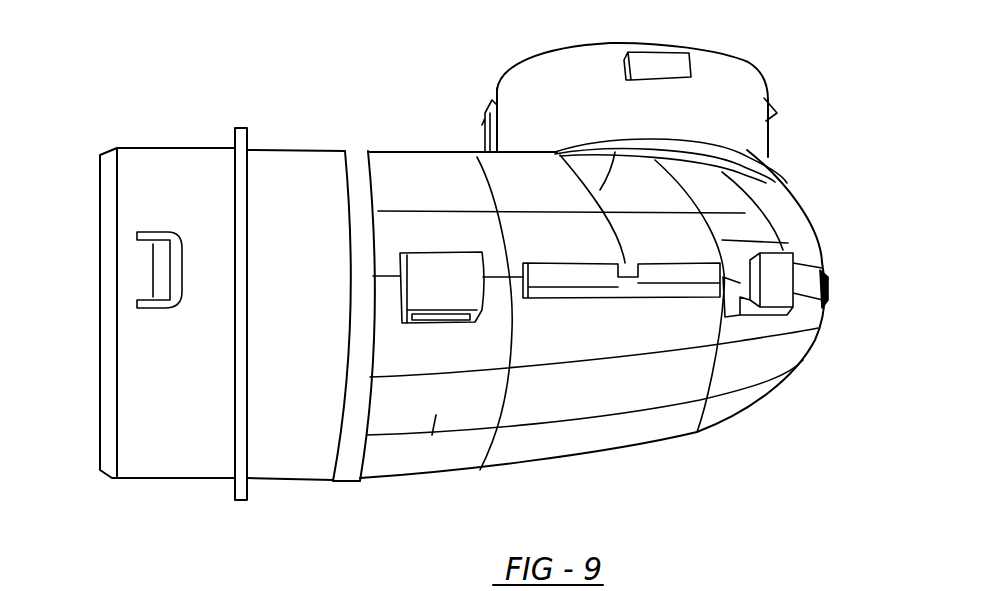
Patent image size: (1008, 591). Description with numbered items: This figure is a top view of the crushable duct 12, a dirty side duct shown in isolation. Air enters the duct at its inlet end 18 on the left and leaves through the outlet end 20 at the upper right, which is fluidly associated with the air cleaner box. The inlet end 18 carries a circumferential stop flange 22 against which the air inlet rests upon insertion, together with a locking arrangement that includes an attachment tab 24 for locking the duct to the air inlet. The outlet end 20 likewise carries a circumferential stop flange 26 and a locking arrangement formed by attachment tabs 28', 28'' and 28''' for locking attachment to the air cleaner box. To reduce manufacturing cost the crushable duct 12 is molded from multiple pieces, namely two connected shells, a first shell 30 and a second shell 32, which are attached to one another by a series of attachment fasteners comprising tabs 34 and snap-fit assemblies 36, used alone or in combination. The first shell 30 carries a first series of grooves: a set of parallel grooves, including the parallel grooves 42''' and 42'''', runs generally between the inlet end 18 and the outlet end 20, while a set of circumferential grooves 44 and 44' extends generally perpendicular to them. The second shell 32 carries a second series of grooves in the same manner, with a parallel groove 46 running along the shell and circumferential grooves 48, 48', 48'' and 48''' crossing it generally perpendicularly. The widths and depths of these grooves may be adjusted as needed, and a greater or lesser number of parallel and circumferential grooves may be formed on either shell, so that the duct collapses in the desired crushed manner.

The crushable duct 12 is at (744, 485).
The inlet end 18 is at (165, 455).
The outlet end 20 is at (747, 128).
The circumferential stop flange 22 is at (240, 488).
The attachment tab 24 is at (163, 305).
The circumferential stop flange 26 is at (787, 183).
The attachment tab 28' is at (808, 88).
The attachment tab 28'' is at (718, 43).
The attachment tab 28''' is at (470, 83).
The first shell 30 is at (642, 430).
The second shell 32 is at (285, 170).
The tab 34 is at (588, 272).
The snap-fit assembly 36 is at (425, 283).
The parallel groove 42''' is at (418, 479).
The parallel groove 42'''' is at (786, 333).
The circumferential groove 44 is at (534, 455).
The circumferential groove 44' is at (759, 424).
The parallel groove 46 is at (547, 213).
The circumferential groove 48 is at (443, 143).
The circumferential groove 48' is at (575, 135).
The circumferential groove 48'' is at (797, 217).
The circumferential groove 48''' is at (765, 296).